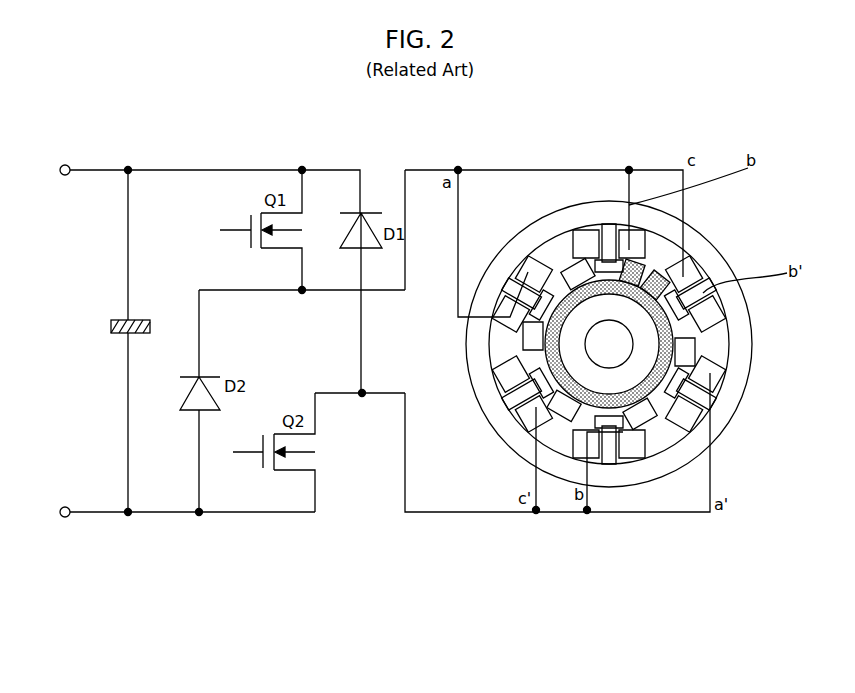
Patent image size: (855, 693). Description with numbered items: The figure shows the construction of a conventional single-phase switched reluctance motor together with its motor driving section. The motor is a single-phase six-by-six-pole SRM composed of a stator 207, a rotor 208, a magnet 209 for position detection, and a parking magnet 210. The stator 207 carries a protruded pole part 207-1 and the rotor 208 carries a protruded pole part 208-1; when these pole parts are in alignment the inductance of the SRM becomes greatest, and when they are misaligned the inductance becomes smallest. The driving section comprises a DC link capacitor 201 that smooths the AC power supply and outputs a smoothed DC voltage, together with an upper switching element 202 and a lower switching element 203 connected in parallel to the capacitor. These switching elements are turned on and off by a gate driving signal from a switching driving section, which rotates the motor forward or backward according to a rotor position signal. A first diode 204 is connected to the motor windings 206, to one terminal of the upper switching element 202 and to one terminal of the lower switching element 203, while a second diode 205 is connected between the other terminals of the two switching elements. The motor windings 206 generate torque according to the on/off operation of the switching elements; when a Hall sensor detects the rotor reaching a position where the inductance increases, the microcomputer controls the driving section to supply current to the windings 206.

The DC link capacitor 201 is at (140, 318).
The upper switching element 202 is at (262, 212).
The lower switching element 203 is at (282, 470).
The first diode 204 is at (220, 373).
The second diode 205 is at (370, 210).
The motor windings 206 is at (342, 291).
The stator 207 is at (527, 442).
The protruded pole part of the stator 207-1 is at (625, 428).
The rotor 208 is at (632, 372).
The protruded pole part of the rotor 208-1 is at (577, 418).
The magnet for position detection 209 is at (673, 355).
The parking magnet 210 is at (655, 258).